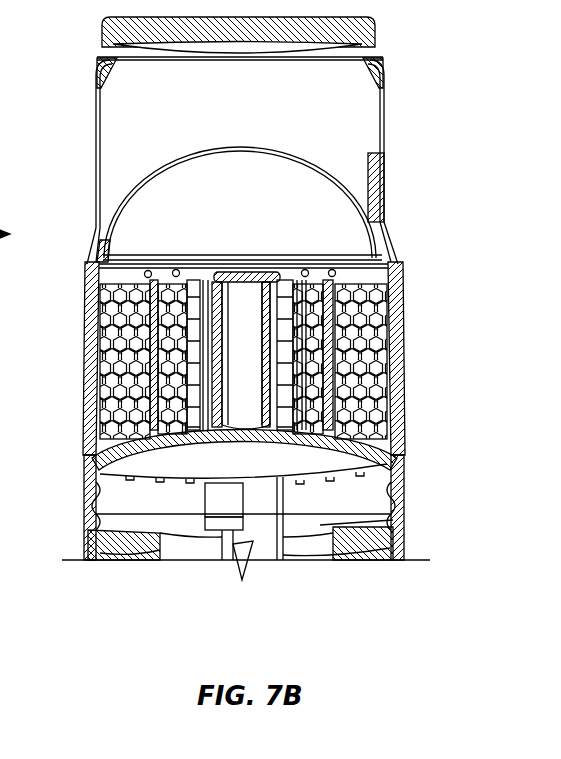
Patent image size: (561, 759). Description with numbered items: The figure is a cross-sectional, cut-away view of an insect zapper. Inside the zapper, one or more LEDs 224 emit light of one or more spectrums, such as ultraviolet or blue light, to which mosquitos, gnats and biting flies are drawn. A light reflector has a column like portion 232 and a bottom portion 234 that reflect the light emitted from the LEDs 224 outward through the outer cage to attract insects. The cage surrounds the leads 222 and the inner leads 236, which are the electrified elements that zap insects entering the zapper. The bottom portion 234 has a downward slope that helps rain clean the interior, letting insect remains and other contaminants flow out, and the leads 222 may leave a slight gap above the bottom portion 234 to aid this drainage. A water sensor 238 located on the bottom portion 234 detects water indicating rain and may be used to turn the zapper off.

The leads 222 is at (372, 398).
The LEDs 224 is at (207, 280).
The column like portion 232 is at (340, 358).
The bottom portion 234 is at (372, 422).
The inner leads 236 is at (177, 360).
The water sensor 238 is at (175, 437).